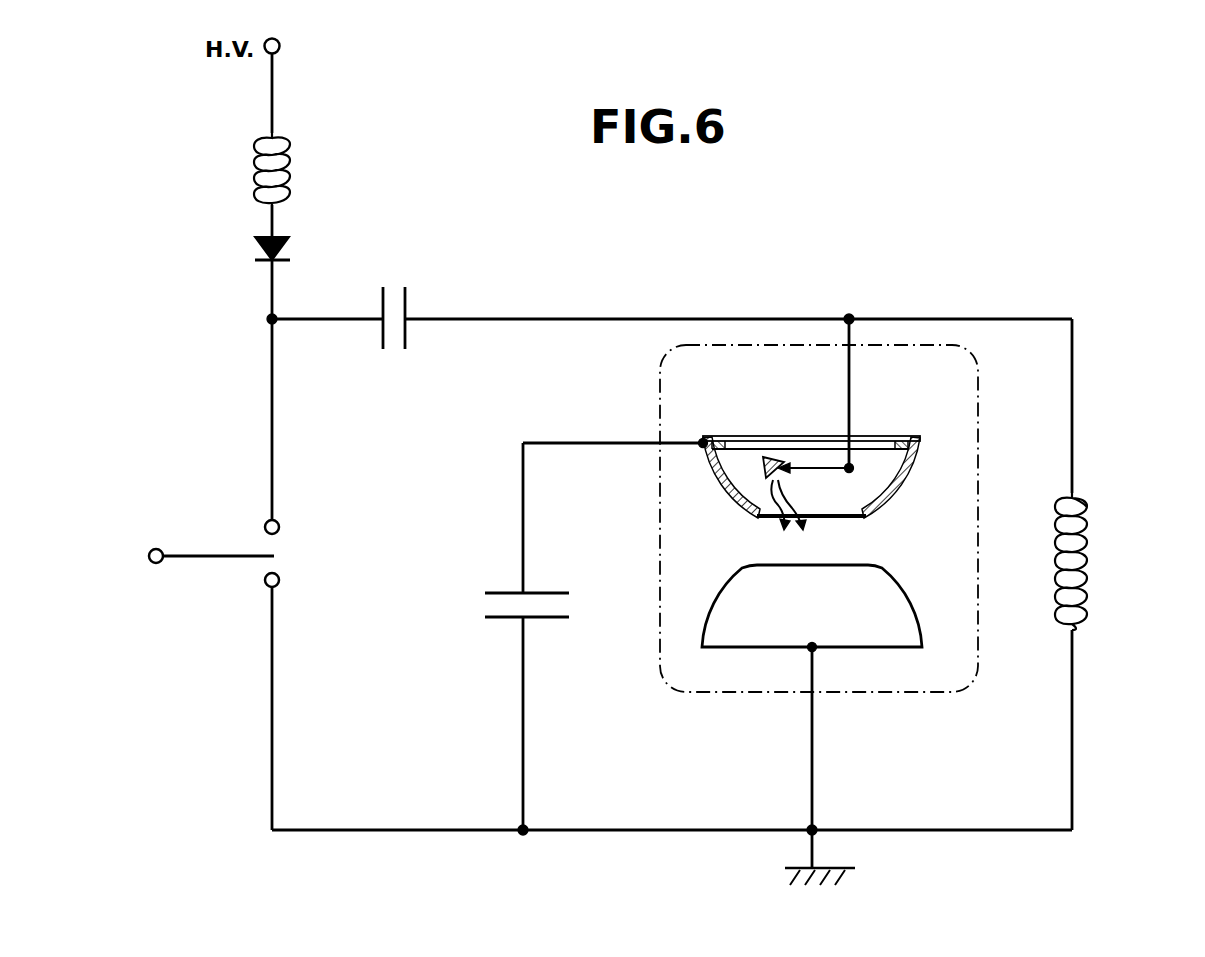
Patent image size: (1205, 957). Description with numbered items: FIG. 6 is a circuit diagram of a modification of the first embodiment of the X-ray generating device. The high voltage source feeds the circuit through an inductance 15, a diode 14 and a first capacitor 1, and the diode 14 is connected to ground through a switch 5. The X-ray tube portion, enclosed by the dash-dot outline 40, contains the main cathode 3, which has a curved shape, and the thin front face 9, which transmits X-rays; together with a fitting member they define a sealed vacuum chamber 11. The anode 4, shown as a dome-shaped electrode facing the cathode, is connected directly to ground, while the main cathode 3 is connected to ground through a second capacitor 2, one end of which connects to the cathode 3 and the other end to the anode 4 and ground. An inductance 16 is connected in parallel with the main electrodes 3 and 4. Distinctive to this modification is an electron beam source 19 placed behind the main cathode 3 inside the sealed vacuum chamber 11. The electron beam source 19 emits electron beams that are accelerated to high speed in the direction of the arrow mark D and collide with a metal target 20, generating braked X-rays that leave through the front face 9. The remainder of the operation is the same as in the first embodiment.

The first capacitor 1 is at (407, 330).
The second capacitor 2 is at (519, 627).
The main cathode 3 is at (905, 487).
The anode 4 is at (912, 598).
The switch 5 is at (262, 568).
The front face 9 is at (855, 520).
The sealed vacuum chamber 11 is at (885, 465).
The diode 14 is at (282, 245).
The inductance 15 is at (290, 185).
The inductance 16 is at (1086, 502).
The electron beam source 19 is at (856, 462).
The metal target 20 is at (762, 460).
The X-ray tube unit 40 is at (893, 695).
The arrow mark D is at (790, 462).